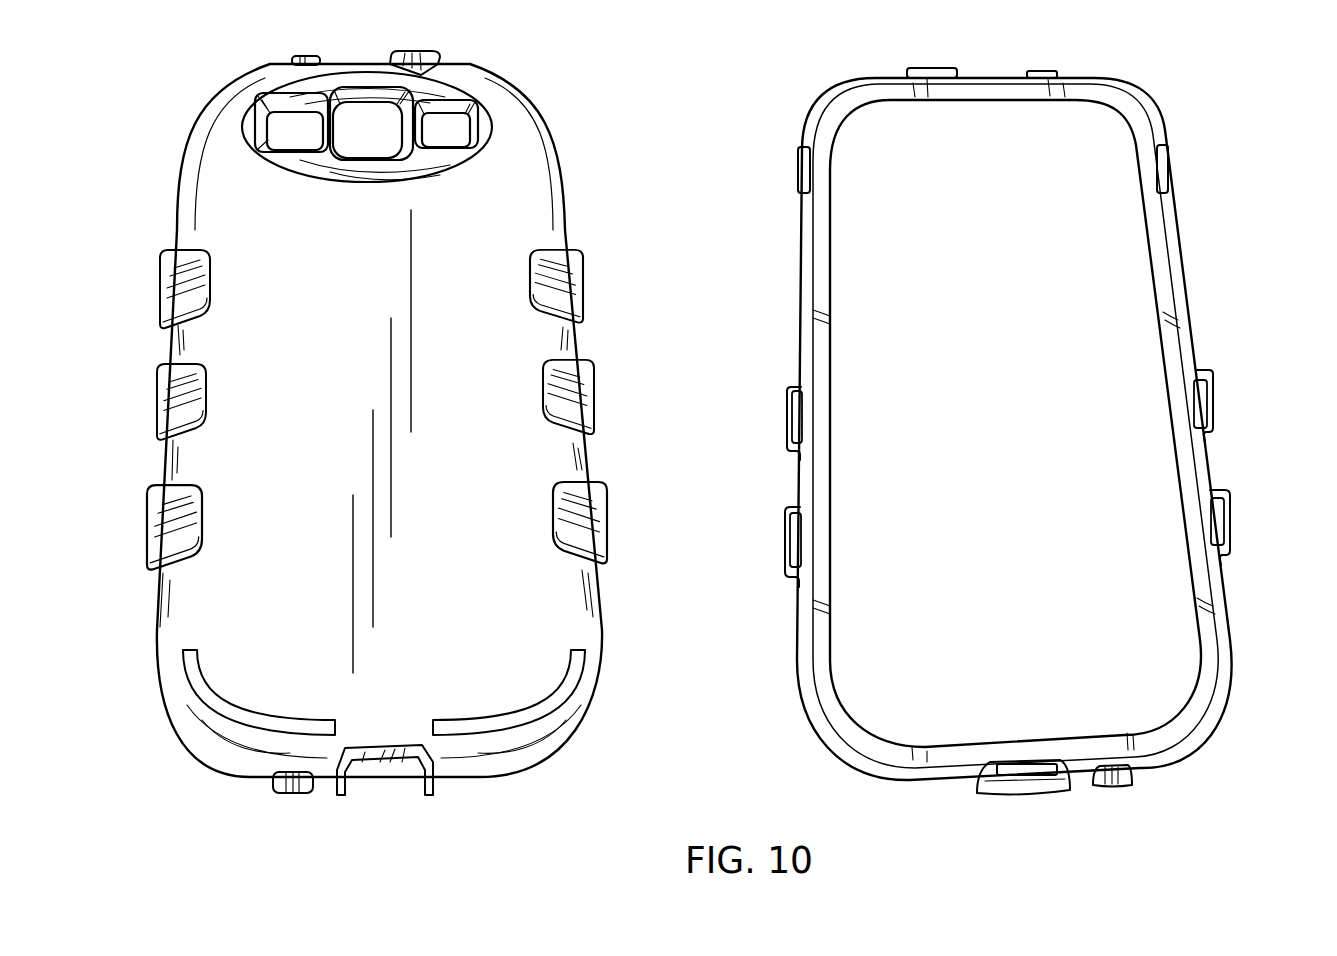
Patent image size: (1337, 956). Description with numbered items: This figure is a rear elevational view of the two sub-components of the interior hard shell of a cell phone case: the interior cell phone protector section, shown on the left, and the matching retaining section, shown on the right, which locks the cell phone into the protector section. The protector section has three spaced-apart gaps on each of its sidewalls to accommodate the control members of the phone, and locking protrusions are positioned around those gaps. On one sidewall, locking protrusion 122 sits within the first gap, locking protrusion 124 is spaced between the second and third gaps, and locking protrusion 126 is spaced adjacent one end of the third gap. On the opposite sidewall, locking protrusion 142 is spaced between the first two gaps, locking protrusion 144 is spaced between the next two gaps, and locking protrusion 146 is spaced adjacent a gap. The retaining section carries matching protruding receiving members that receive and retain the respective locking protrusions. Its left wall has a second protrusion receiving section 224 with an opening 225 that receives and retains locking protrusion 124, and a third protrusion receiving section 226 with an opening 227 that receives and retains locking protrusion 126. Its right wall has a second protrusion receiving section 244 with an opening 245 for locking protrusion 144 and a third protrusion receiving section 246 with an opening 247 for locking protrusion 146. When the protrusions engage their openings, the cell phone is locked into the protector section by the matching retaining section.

The locking protrusion 122 is at (583, 272).
The locking protrusion 124 is at (594, 388).
The locking protrusion 126 is at (607, 508).
The locking protrusion 142 is at (160, 289).
The locking protrusion 144 is at (157, 400).
The locking protrusion 146 is at (148, 522).
The second protrusion receiving section 224 is at (1212, 381).
The opening 225 is at (1206, 414).
The third protrusion receiving section 226 is at (1228, 502).
The opening 227 is at (1220, 536).
The second protrusion receiving section 244 is at (788, 418).
The opening 245 is at (792, 443).
The third protrusion receiving section 246 is at (788, 539).
The opening 247 is at (793, 563).